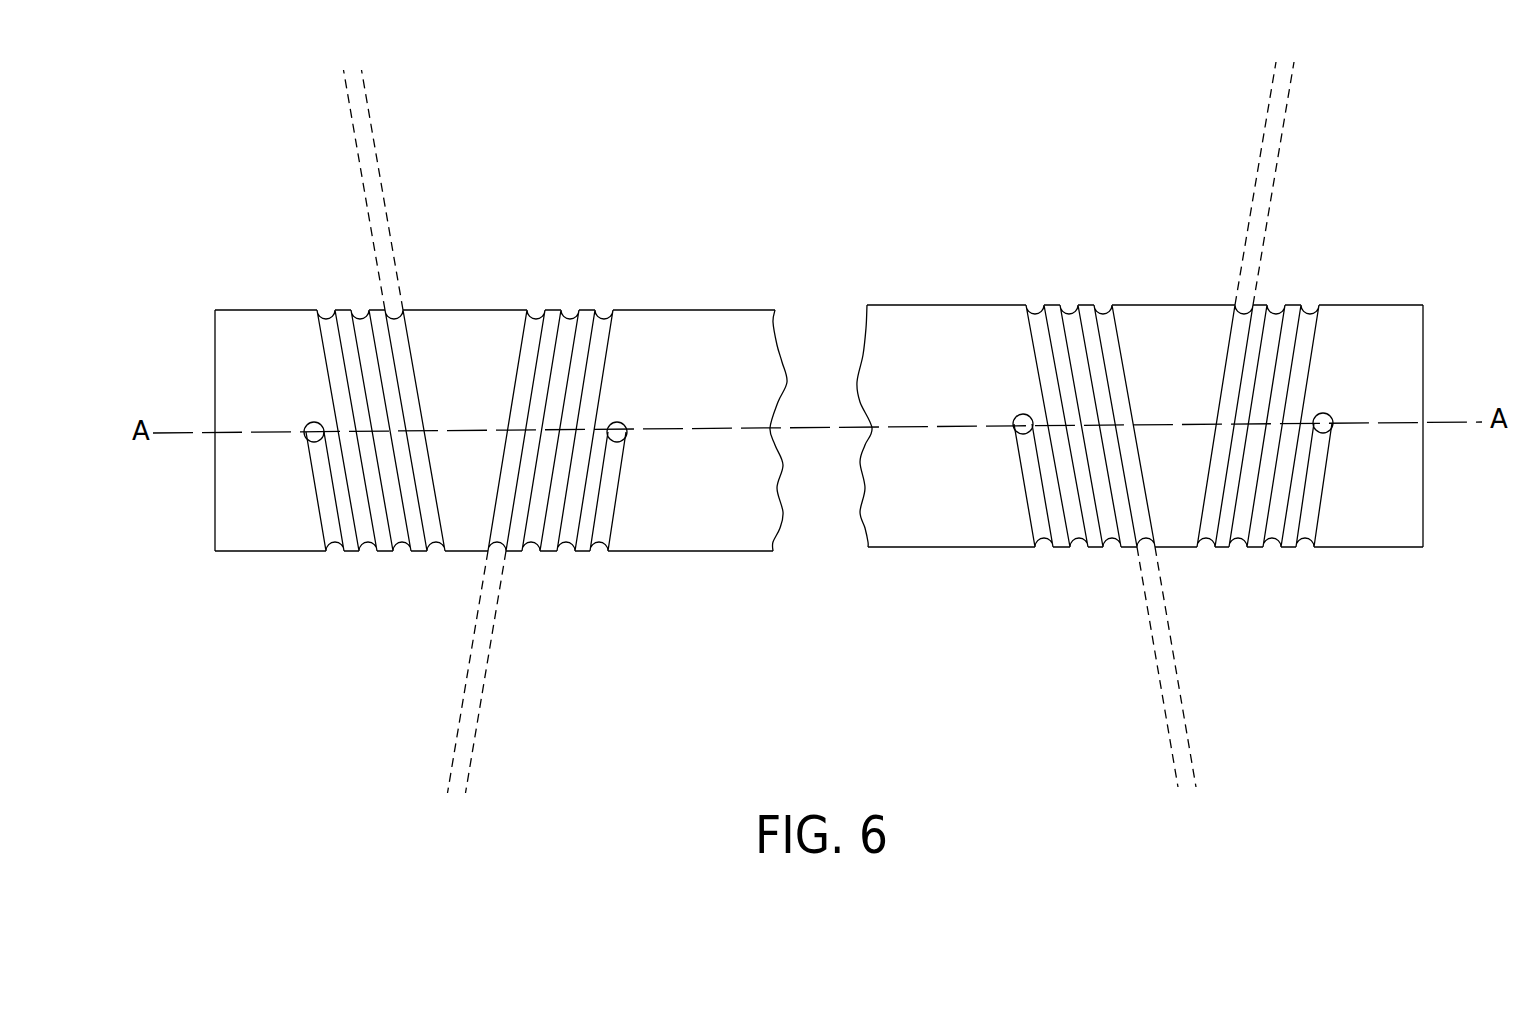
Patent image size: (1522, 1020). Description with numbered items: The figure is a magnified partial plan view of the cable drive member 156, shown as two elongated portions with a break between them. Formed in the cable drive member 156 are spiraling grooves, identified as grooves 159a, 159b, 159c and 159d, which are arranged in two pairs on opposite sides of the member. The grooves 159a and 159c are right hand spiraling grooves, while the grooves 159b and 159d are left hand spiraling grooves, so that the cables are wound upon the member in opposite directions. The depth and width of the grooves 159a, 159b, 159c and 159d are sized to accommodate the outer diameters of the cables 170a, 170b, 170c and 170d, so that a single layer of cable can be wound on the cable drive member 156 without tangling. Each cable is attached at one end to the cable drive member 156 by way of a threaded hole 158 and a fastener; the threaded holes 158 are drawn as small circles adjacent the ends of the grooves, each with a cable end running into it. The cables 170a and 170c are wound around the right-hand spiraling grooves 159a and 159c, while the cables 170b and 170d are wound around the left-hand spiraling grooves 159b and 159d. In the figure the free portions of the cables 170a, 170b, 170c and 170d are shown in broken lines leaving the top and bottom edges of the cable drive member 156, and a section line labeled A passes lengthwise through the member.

The cable drive member 156 is at (257, 551).
The threaded holes 158 is at (314, 422).
The right hand spiraling groove 159a is at (615, 298).
The left hand spiraling groove 159b is at (1112, 293).
The right hand spiraling groove 159c is at (1280, 557).
The left hand spiraling groove 159d is at (445, 566).
The cable 170a is at (473, 760).
The cable 170b is at (1170, 752).
The cable 170c is at (1257, 165).
The cable 170d is at (380, 170).